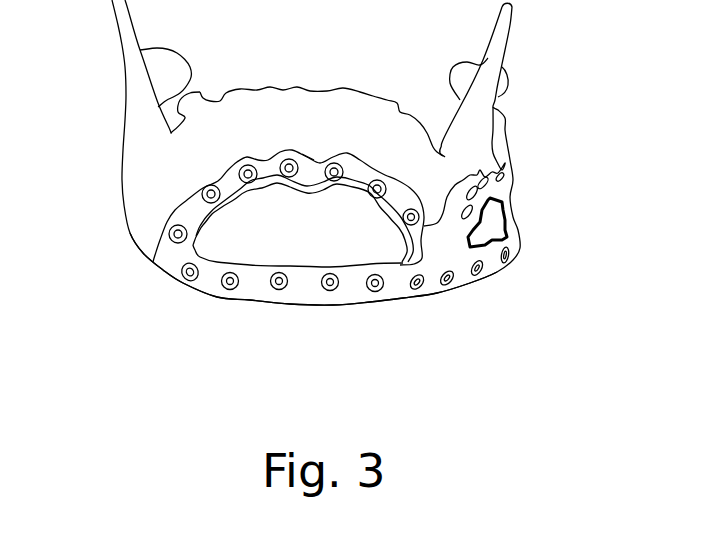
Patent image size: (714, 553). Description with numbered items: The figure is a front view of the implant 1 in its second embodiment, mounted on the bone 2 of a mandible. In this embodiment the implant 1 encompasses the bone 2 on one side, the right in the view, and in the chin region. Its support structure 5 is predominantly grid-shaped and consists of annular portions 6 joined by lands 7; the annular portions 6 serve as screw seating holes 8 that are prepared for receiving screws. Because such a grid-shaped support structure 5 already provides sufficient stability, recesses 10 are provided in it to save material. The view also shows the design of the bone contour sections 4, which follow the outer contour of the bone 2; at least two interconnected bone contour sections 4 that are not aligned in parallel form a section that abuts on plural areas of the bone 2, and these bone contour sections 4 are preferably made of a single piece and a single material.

The implant 1 is at (178, 315).
The bone 2 is at (137, 223).
The bone contour section 4 is at (265, 170).
The support structure 5 is at (177, 255).
The annular portion 6 is at (443, 187).
The land 7 is at (308, 167).
The screw seating hole 8 is at (205, 194).
The recess 10 is at (373, 240).